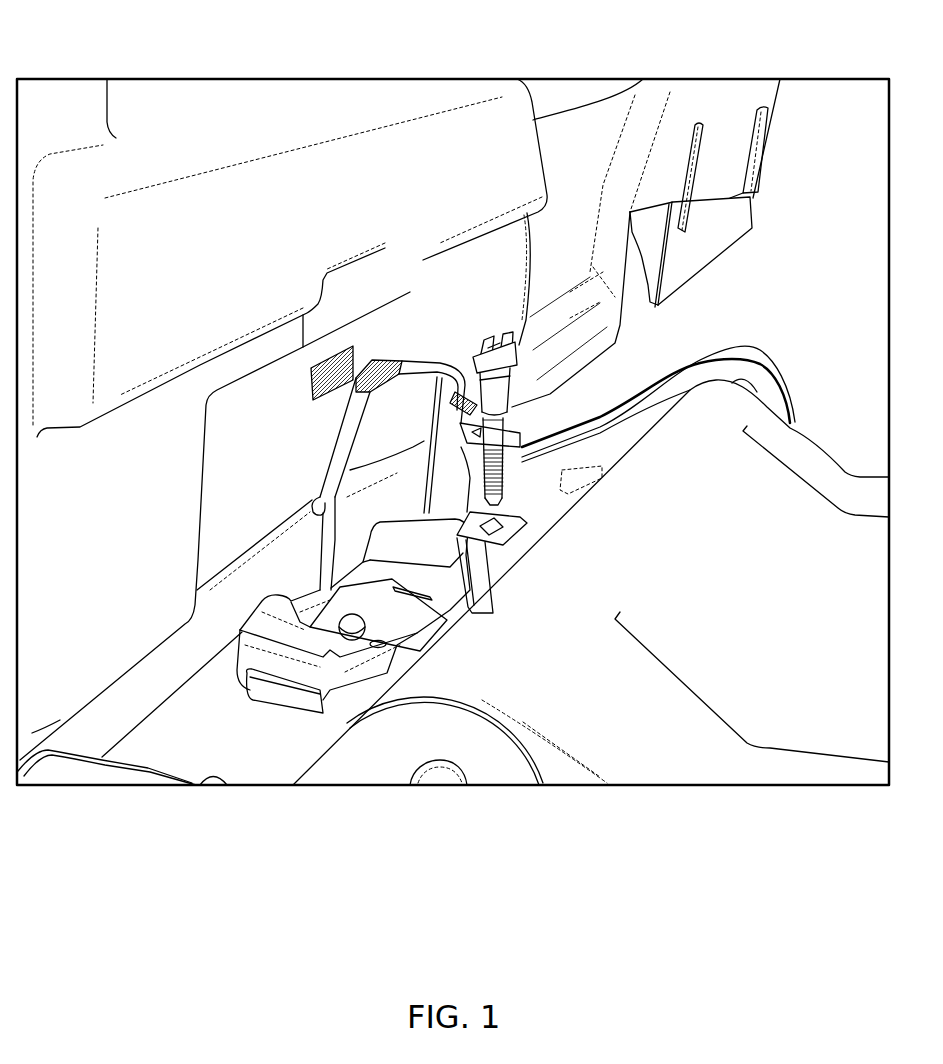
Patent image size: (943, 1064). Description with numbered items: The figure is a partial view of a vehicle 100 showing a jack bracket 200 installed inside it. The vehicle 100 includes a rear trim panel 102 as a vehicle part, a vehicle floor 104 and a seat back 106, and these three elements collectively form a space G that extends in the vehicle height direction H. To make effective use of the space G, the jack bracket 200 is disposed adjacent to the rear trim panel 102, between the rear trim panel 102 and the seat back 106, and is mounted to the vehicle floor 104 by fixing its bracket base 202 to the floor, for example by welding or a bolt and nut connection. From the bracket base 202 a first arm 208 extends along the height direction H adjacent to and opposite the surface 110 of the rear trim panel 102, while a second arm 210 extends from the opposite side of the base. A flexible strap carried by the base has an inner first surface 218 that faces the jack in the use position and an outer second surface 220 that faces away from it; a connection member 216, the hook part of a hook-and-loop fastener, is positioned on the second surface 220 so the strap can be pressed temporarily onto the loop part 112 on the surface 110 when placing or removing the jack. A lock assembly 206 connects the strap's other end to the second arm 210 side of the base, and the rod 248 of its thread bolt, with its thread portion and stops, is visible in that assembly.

The vehicle 100 is at (624, 58).
The rear trim panel 102 is at (226, 458).
The vehicle floor 104 is at (267, 773).
The seat back 106 is at (850, 627).
The surface 110 is at (218, 437).
The loop part 112 is at (312, 386).
The jack bracket 200 is at (306, 499).
The bracket base 202 is at (273, 703).
The lock assembly 206 is at (511, 405).
The first arm 208 is at (342, 520).
The second arm 210 is at (473, 587).
The connection member 216 is at (387, 366).
The first surface 218 is at (355, 430).
The second surface 220 is at (427, 372).
The rod 248 is at (500, 488).
The space G is at (683, 345).
The vehicle height direction H is at (801, 125).